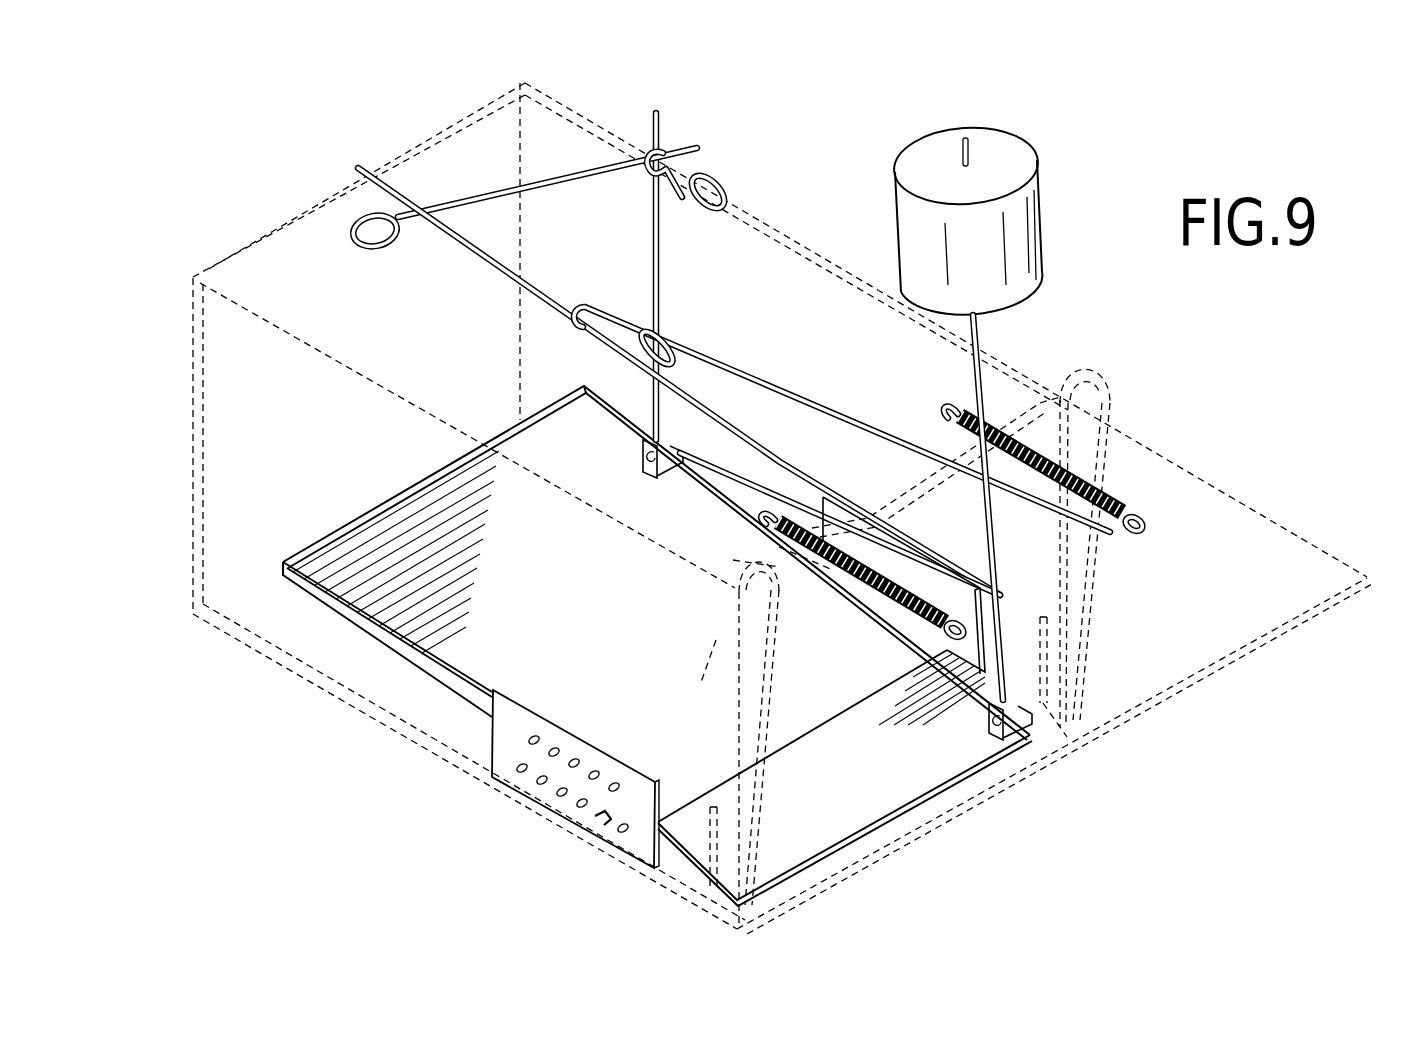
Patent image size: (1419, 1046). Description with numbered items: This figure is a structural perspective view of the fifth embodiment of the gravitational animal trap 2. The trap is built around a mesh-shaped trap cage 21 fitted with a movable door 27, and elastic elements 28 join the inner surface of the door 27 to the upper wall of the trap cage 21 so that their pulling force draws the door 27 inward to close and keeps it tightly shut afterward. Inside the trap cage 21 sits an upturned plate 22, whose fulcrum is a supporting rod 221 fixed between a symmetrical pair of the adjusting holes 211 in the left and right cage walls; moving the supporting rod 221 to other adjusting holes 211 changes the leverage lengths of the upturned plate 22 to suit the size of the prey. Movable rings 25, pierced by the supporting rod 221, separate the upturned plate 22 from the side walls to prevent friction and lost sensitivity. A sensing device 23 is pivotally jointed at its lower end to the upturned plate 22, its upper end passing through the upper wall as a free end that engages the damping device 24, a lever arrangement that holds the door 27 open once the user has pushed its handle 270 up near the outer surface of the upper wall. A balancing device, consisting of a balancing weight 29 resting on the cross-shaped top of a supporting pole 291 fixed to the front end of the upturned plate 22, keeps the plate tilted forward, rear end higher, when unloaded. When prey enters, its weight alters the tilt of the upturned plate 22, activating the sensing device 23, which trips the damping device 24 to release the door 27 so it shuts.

The gravitational animal trap 2 is at (786, 186).
The trap cage 21 is at (636, 594).
The upturned plate 22 is at (535, 618).
The sensing device 23 is at (660, 266).
The damping device 24 is at (450, 268).
The movable ring 25 is at (911, 626).
The movable door 27 is at (1284, 540).
The elastic element 28 is at (1115, 492).
The balancing weight 29 is at (1043, 203).
The adjusting holes 211 is at (556, 745).
The supporting rod 221 is at (598, 830).
The handle 270 is at (845, 412).
The supporting pole 291 is at (979, 345).